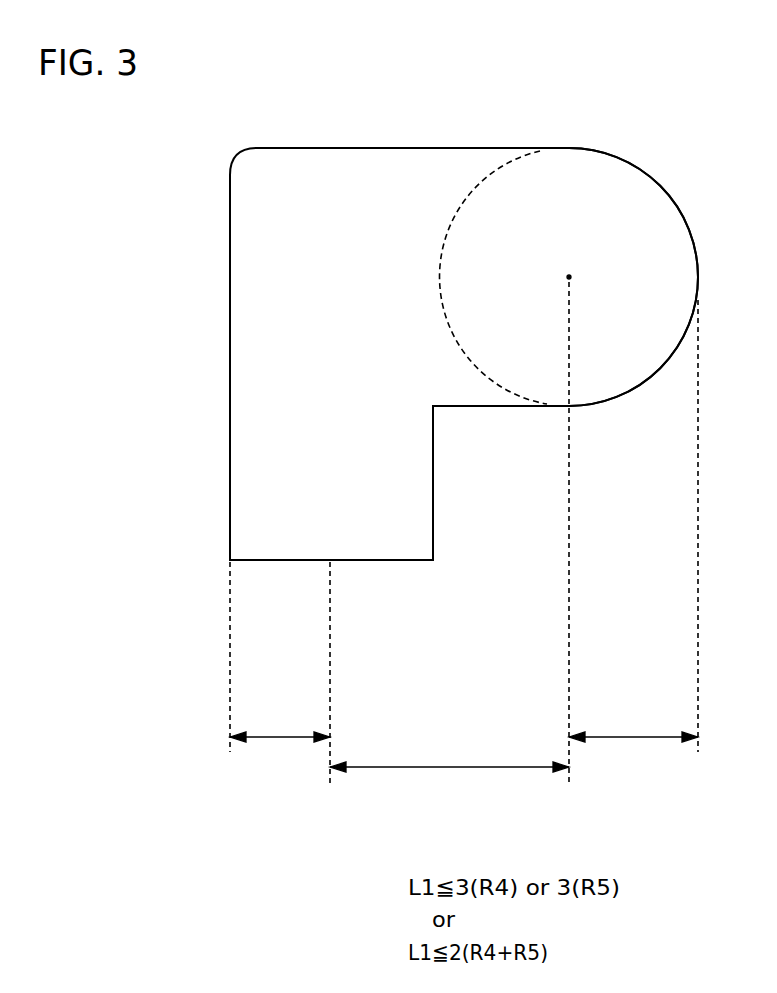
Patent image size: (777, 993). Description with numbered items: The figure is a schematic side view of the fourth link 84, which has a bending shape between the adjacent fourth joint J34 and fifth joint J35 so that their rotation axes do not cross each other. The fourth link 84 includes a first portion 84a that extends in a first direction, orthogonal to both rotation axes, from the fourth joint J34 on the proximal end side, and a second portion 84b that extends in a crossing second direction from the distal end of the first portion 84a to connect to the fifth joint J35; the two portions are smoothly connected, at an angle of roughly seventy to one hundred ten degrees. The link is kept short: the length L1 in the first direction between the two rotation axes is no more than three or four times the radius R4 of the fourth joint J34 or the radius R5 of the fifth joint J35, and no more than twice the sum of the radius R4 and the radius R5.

The fourth link 84 is at (312, 105).
The first portion 84a is at (478, 148).
The second portion 84b is at (230, 403).
The fourth joint J34 is at (640, 185).
The fifth joint J35 is at (270, 560).
The radius of the fourth joint R4 is at (633, 725).
The radius of the fifth joint R5 is at (280, 725).
The length in the first direction L1 is at (449, 757).